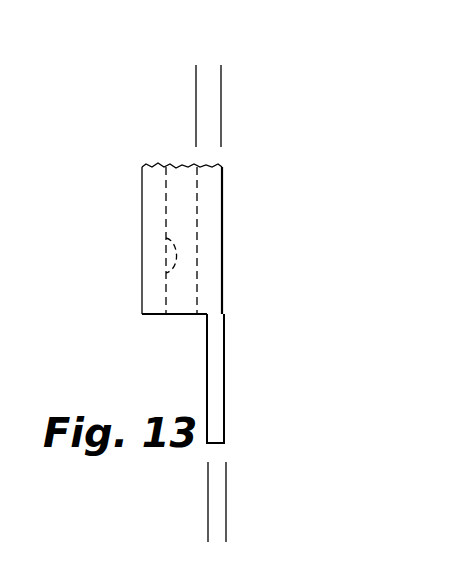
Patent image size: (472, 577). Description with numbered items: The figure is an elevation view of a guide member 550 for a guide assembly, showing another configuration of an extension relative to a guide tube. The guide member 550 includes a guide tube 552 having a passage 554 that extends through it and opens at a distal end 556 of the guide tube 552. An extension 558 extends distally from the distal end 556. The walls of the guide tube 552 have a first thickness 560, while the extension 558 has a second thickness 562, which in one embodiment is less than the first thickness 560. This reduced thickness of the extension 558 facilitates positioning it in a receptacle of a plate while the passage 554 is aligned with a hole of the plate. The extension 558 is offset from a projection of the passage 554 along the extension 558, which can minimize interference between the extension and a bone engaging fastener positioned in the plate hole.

The guide member 550 is at (128, 147).
The guide tube 552 is at (141, 211).
The passage 554 is at (166, 273).
The distal end 556 is at (142, 314).
The extension 558 is at (226, 386).
The first thickness 560 is at (145, 87).
The second thickness 562 is at (277, 522).